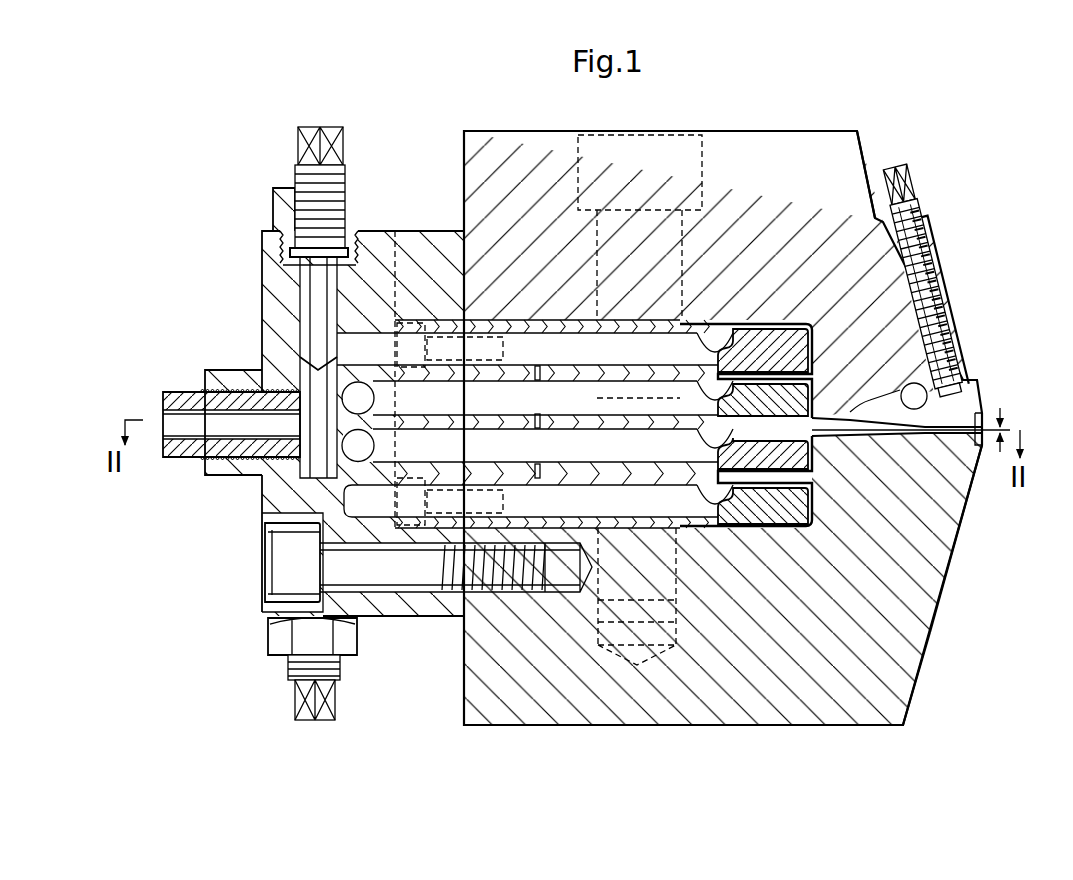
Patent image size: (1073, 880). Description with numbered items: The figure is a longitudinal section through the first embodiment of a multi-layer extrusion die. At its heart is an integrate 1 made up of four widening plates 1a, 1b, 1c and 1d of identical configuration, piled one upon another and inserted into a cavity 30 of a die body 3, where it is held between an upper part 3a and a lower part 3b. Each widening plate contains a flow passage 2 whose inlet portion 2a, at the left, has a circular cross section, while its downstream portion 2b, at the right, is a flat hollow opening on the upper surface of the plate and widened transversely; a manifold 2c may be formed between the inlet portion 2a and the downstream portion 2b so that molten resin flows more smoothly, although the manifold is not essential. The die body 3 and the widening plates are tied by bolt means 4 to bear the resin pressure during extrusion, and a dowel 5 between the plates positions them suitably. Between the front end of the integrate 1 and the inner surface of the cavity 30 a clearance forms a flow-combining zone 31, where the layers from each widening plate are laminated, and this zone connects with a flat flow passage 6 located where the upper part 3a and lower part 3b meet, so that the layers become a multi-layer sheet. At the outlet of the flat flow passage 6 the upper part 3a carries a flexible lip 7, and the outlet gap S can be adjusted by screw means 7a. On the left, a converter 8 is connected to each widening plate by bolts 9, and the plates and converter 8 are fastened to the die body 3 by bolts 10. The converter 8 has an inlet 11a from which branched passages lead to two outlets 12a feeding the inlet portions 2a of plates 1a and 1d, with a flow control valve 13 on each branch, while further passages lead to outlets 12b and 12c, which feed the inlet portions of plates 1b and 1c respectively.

The integrate 1 is at (862, 150).
The widening plate 1a is at (930, 260).
The widening plate 1b is at (968, 548).
The widening plate 1c is at (943, 640).
The widening plate 1d is at (888, 718).
The flow passage 2 is at (552, 424).
The inlet portion 2a is at (538, 362).
The downstream portion 2b is at (750, 340).
The manifold 2c is at (720, 336).
The die body 3 is at (868, 150).
The upper part 3a is at (790, 222).
The lower part 3b is at (767, 630).
The bolt means 4 is at (777, 325).
The dowel 5 is at (538, 368).
The flat flow passage 6 is at (928, 394).
The flexible lip 7 is at (978, 393).
The screw means 7a is at (860, 345).
The converter 8 is at (403, 236).
The bolts 9 is at (400, 353).
The bolts 10 is at (280, 566).
The inlet 11a is at (170, 432).
The outlet 12a is at (452, 320).
The outlet 12b is at (330, 398).
The outlet 12c is at (530, 445).
The flow control valve 13 is at (346, 180).
The cavity 30 is at (880, 302).
The flow-combining zone 31 is at (880, 322).
The gap S is at (1010, 423).